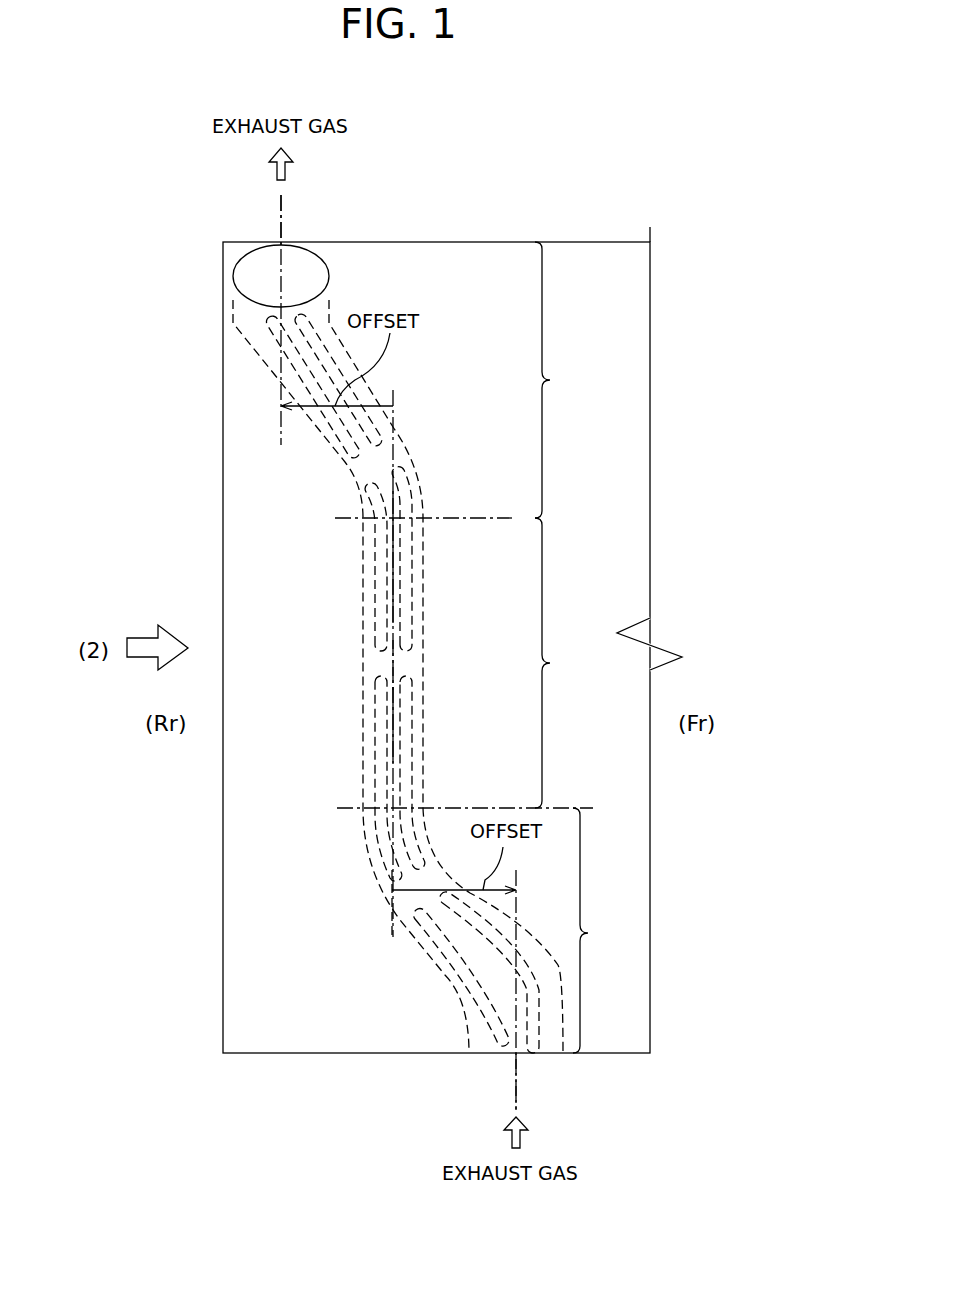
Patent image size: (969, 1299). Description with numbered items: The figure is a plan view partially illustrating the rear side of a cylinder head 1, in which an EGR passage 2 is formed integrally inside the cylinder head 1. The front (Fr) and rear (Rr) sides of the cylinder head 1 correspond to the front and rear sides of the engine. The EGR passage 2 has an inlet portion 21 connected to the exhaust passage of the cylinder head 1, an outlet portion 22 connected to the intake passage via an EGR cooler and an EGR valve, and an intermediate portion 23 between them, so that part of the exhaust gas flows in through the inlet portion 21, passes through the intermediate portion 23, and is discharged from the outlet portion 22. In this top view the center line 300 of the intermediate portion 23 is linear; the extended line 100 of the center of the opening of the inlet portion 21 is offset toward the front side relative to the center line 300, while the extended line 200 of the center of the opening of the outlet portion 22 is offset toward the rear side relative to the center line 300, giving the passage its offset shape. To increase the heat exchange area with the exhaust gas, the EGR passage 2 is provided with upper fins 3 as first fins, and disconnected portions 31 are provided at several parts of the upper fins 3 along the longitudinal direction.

The cylinder head 1 is at (590, 231).
The EGR passage 2 is at (362, 552).
The upper fins 3 is at (368, 396).
The disconnected portions 31 is at (378, 466).
The center line 300 is at (392, 648).
The extended line 200 is at (282, 220).
The extended line 100 is at (516, 1073).
The inlet portion 21 is at (600, 930).
The outlet portion 22 is at (559, 380).
The intermediate portion 23 is at (559, 663).